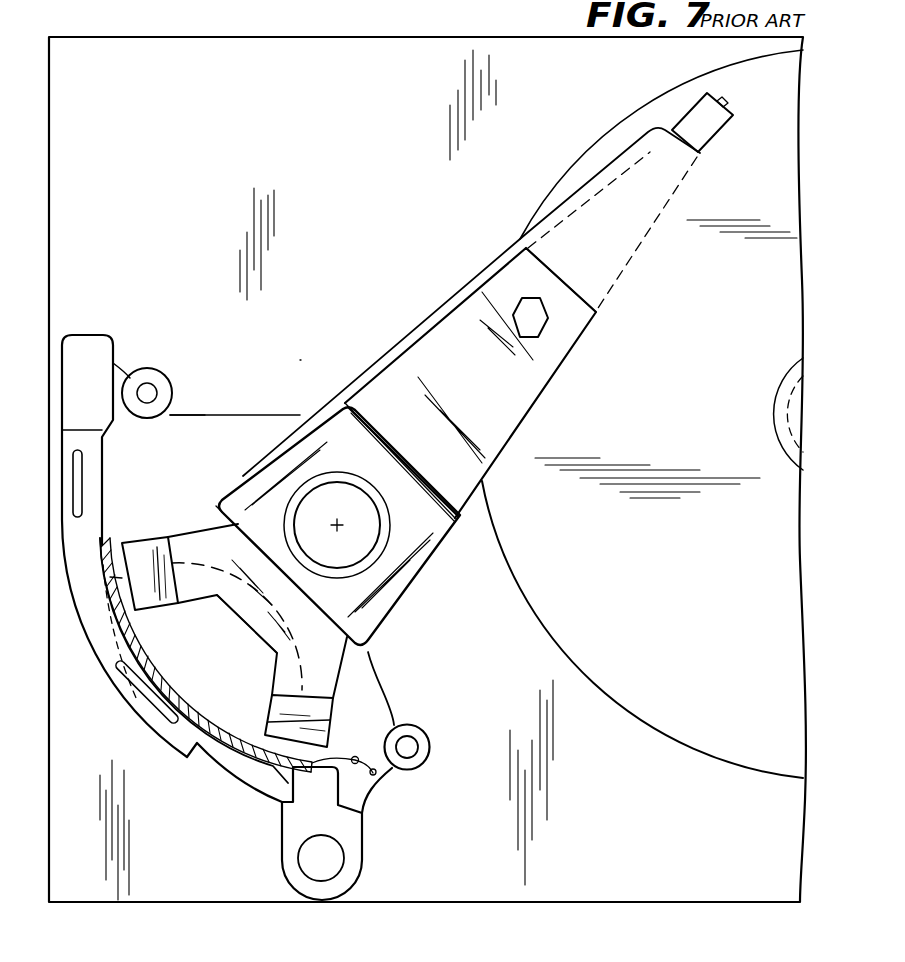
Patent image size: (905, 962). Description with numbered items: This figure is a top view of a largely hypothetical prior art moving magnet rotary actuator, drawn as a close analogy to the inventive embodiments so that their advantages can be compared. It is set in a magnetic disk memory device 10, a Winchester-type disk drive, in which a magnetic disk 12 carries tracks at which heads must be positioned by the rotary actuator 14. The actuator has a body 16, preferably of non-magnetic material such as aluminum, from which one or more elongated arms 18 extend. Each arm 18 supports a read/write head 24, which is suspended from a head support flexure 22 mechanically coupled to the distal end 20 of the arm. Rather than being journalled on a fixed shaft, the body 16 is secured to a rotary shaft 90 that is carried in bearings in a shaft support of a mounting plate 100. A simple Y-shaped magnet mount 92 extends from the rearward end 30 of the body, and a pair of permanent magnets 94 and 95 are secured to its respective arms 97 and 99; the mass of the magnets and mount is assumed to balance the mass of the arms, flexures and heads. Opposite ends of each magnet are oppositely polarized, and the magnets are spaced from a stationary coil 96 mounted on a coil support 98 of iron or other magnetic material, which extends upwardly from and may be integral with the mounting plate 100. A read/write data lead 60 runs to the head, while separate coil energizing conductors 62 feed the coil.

The magnetic disk memory device 10 is at (104, 29).
The magnetic disk 12 is at (590, 148).
The rotary actuator 14 is at (317, 374).
The body 16 is at (258, 488).
The elongated arm 18 is at (427, 331).
The distal end 20 is at (598, 304).
The head support flexure 22 is at (648, 232).
The read/write head 24 is at (705, 142).
The rearward end 30 is at (220, 515).
The read/write data lead 60 is at (227, 475).
The coil energizing conductors 62 is at (355, 765).
The rotary shaft 90 is at (380, 555).
The Y-shaped magnet mount 92 is at (190, 527).
The permanent magnet 94 is at (268, 712).
The permanent magnet 95 is at (156, 605).
The stationary coil 96 is at (262, 758).
The arm of magnet mount 97 is at (272, 672).
The coil support 98 is at (157, 742).
The arm of magnet mount 99 is at (195, 600).
The mounting plate 100 is at (167, 433).